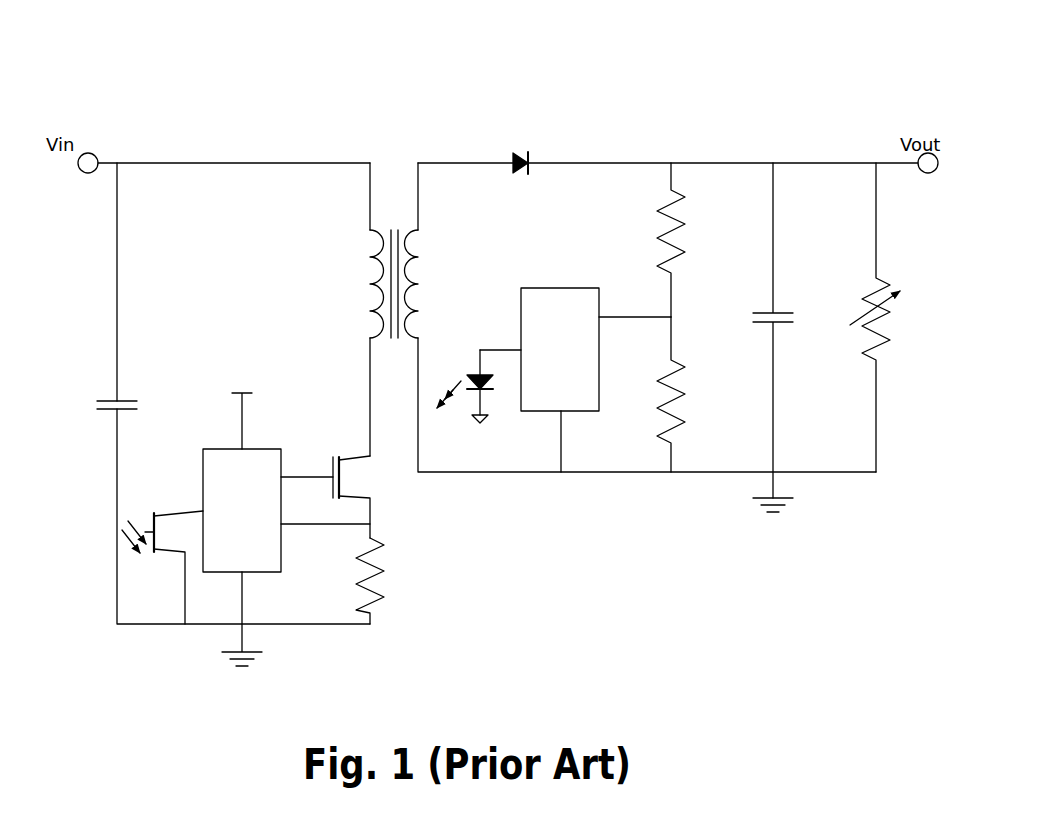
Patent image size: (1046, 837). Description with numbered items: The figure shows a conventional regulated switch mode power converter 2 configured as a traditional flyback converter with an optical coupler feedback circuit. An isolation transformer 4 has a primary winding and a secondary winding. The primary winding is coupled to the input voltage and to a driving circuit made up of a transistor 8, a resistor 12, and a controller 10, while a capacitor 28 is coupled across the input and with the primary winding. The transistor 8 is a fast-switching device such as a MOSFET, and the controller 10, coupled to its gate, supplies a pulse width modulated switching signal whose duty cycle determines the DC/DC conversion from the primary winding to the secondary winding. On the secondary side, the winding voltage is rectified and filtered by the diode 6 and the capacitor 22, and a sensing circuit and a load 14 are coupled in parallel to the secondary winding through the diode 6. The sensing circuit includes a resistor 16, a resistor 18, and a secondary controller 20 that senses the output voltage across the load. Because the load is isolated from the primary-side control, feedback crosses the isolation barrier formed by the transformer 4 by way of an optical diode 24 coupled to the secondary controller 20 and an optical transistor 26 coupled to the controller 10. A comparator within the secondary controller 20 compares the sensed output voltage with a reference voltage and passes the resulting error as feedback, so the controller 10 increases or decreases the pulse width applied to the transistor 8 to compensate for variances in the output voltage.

The power converter 2 is at (733, 66).
The isolation transformer 4 is at (388, 192).
The diode 6 is at (522, 148).
The transistor 8 is at (337, 456).
The controller 10 is at (262, 447).
The resistor 12 is at (357, 582).
The load 14 is at (891, 316).
The resistor 16 is at (686, 248).
The resistor 18 is at (686, 415).
The secondary controller 20 is at (563, 287).
The capacitor 22 is at (787, 313).
The optical diode 24 is at (467, 373).
The optical transistor 26 is at (155, 513).
The capacitor 28 is at (97, 401).